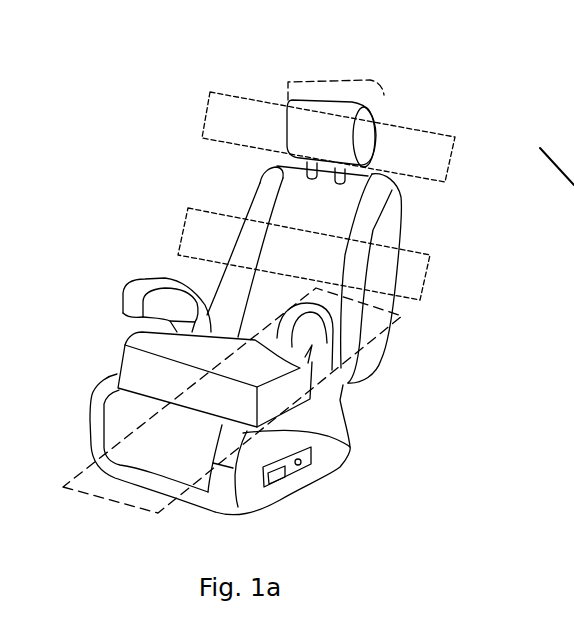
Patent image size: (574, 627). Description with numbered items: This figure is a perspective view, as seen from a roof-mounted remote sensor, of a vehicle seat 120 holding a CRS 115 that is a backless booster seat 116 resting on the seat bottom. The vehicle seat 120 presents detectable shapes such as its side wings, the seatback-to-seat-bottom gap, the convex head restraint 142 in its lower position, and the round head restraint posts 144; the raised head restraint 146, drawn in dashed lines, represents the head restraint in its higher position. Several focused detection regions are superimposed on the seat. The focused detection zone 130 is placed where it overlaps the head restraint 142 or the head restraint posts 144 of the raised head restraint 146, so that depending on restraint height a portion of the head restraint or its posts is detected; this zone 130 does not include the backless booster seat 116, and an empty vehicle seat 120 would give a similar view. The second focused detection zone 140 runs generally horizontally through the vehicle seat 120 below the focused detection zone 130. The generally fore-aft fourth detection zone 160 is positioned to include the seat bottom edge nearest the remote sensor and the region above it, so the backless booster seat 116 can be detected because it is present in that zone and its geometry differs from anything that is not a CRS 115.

The CRS 115 is at (306, 394).
The backless booster seat 116 is at (325, 367).
The vehicle seat 120 is at (391, 365).
The focused detection zone 130 is at (446, 195).
The second focused detection zone 140 is at (411, 309).
The head restraint 142 is at (362, 101).
The head restraint posts 144 is at (291, 173).
The raised head restraint 146 is at (282, 77).
The fourth detection zone 160 is at (68, 465).